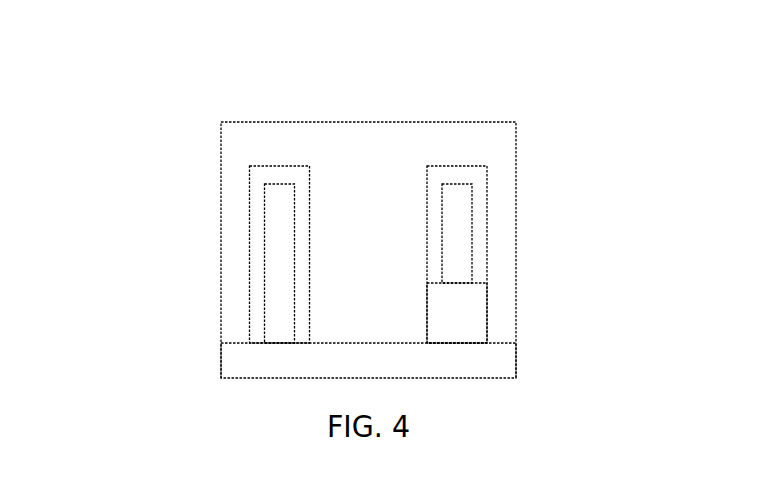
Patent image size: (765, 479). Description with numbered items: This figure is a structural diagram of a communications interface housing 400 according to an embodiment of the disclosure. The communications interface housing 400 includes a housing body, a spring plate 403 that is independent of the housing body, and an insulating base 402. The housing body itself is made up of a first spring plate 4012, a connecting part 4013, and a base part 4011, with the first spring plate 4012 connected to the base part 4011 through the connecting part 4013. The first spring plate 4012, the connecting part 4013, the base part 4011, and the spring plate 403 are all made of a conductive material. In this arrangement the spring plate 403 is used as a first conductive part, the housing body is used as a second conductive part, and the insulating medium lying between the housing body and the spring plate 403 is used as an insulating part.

The communications interface housing 400 is at (366, 70).
The insulating base 402 is at (501, 368).
The spring plate 403 is at (293, 263).
The base part 4011 is at (444, 150).
The first spring plate 4012 is at (456, 235).
The connecting part 4013 is at (459, 312).